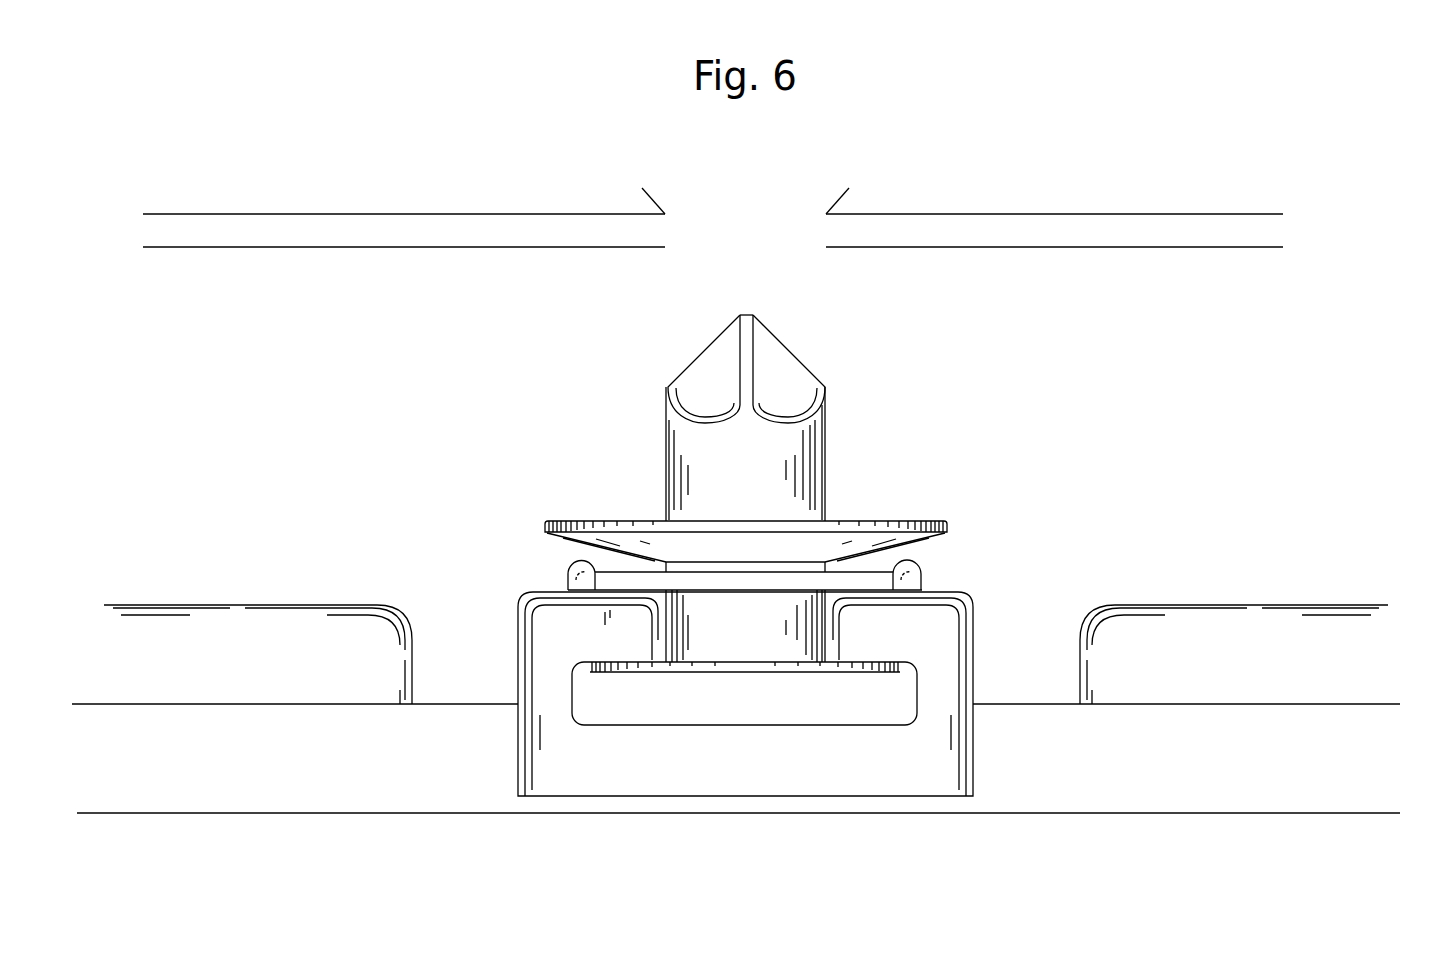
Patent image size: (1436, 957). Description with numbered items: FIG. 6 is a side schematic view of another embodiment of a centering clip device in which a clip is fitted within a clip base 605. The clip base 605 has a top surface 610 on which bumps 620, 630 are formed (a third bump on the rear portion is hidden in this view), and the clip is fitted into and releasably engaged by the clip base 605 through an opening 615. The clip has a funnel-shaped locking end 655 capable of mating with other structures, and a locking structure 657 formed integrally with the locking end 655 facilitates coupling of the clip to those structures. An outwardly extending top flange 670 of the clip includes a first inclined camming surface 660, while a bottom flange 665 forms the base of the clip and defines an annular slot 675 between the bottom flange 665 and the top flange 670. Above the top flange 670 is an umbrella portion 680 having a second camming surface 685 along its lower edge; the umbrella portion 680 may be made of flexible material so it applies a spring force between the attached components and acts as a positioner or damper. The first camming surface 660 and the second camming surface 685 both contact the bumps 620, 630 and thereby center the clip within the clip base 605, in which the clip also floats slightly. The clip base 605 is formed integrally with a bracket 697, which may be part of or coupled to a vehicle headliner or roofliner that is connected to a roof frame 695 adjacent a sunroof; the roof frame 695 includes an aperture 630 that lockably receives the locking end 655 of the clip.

The clip base 605 is at (701, 408).
The top surface 610 is at (552, 592).
The opening 615 is at (843, 710).
The bump 620 is at (925, 575).
The bump / aperture 630 is at (708, 225).
The locking end 655 is at (716, 346).
The locking structure 657 is at (795, 383).
The first inclined camming surface 660 is at (610, 594).
The bottom flange 665 is at (763, 666).
The top flange 670 is at (620, 580).
The annular slot 675 is at (710, 652).
The umbrella portion 680 is at (910, 522).
The second camming surface 685 is at (558, 537).
The roof frame 695 is at (1043, 235).
The bracket 697 is at (1145, 793).